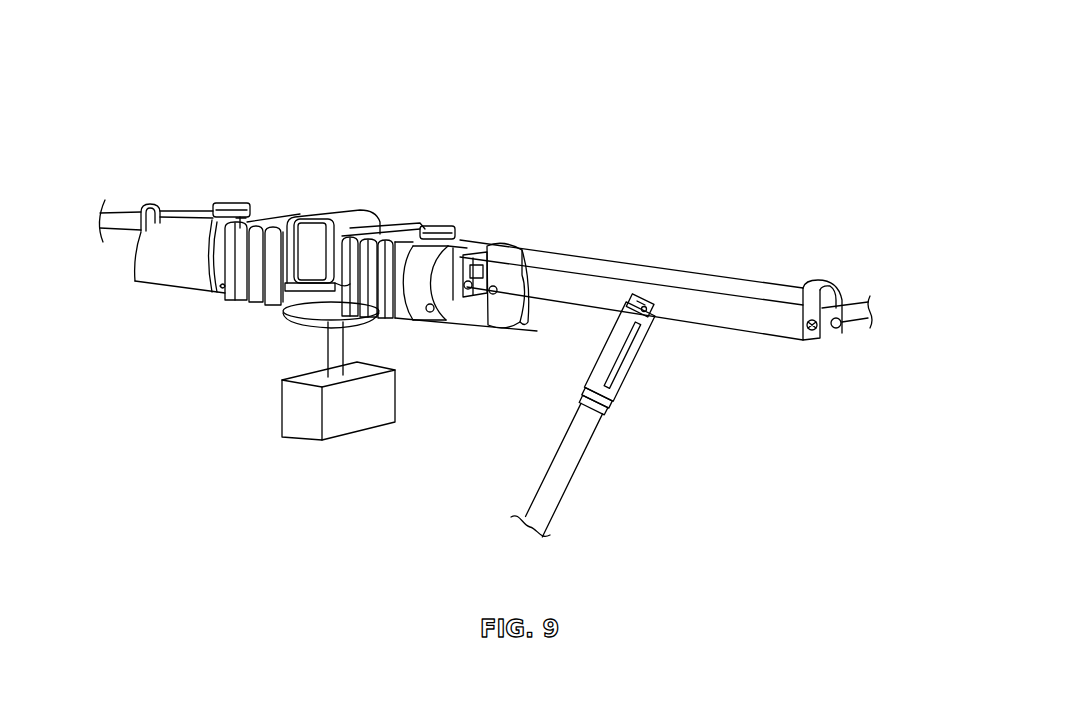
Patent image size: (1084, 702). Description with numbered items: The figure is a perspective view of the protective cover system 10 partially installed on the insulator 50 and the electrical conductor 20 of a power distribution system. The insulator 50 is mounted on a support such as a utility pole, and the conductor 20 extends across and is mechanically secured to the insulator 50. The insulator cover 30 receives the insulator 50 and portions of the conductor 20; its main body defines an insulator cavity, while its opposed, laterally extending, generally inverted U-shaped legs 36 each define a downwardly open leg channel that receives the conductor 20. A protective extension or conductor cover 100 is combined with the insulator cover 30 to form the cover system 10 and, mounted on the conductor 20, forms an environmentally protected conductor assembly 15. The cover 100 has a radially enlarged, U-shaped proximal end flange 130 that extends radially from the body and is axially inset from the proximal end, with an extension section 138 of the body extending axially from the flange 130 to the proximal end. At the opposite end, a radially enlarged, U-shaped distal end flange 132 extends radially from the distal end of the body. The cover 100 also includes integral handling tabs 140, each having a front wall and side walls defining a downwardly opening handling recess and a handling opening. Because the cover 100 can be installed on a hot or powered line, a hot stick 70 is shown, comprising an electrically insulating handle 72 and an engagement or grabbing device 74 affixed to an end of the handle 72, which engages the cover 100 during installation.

The conductor cover 100 is at (696, 89).
The environmentally protected conductor assembly 15 is at (420, 112).
The protective cover system 10 is at (374, 194).
The insulator cover 30 is at (343, 194).
The legs 36 is at (185, 278).
The insulator 50 is at (278, 320).
The extension section 138 is at (483, 252).
The proximal end flange 130 is at (514, 248).
The distal end flange 132 is at (820, 290).
The electrical conductor 20 is at (850, 320).
The handling tab 140 is at (647, 316).
The handle 72 is at (647, 327).
The hot stick 70 is at (604, 457).
The grabbing device 74 is at (547, 508).